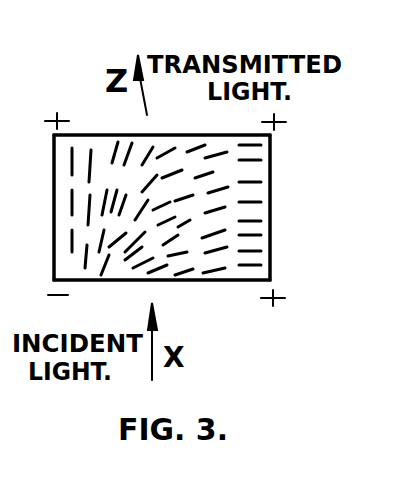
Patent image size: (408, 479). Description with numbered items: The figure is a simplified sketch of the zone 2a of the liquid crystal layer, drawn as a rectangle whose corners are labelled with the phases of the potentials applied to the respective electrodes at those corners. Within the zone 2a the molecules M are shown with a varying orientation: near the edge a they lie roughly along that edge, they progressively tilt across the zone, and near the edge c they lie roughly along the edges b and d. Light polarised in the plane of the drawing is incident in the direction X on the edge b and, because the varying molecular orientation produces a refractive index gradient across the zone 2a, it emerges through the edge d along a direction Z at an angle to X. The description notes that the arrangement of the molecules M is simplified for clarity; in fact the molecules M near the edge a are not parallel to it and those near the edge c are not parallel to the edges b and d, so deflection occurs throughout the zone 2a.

The zone 2a is at (276, 235).
The edge a is at (57, 165).
The edge b is at (200, 281).
The edge c is at (271, 185).
The edge d is at (167, 134).
The molecules M is at (72, 198).